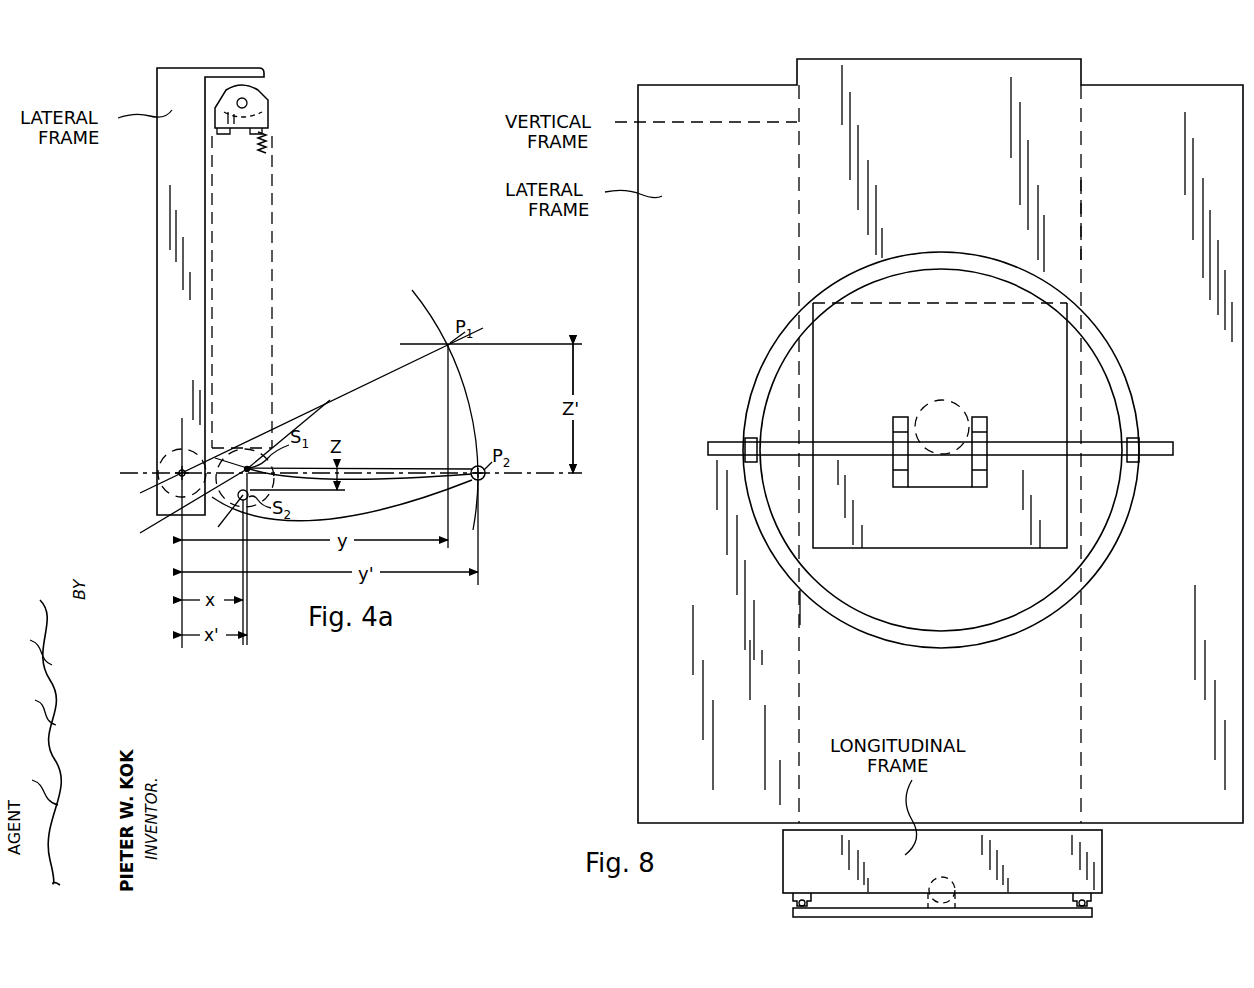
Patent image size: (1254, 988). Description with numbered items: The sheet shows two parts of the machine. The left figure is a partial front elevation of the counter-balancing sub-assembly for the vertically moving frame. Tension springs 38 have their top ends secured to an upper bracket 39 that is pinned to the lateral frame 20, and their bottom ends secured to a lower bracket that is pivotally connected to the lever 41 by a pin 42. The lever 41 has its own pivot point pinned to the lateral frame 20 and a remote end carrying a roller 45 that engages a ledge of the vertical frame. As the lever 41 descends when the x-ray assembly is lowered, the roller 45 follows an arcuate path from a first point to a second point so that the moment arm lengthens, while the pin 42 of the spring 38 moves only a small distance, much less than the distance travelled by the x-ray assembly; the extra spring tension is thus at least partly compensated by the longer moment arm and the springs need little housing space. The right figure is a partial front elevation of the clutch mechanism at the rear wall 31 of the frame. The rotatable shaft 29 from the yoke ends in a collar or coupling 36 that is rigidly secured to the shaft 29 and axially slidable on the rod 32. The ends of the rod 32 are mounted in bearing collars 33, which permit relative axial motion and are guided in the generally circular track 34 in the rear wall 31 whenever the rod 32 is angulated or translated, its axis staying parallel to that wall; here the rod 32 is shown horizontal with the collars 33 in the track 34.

In FIG. 4A, the lateral frame 20 is at (172, 160).
In FIG. 4A, the tension spring 38 is at (270, 140).
In FIG. 4A, the upper bracket 39 is at (270, 104).
In FIG. 4A, the lever 41 is at (342, 547).
In FIG. 4A, the pin 42 is at (218, 496).
In FIG. 4A, the roller 45 is at (488, 482).
In FIG. 8, the rotatable shaft 29 is at (940, 400).
In FIG. 8, the rear wall 31 is at (1084, 230).
In FIG. 8, the rod 32 is at (1037, 447).
In FIG. 8, the bearing collar 33 is at (1133, 438).
In FIG. 8, the circular track 34 is at (1122, 507).
In FIG. 8, the coupling 36 is at (982, 422).